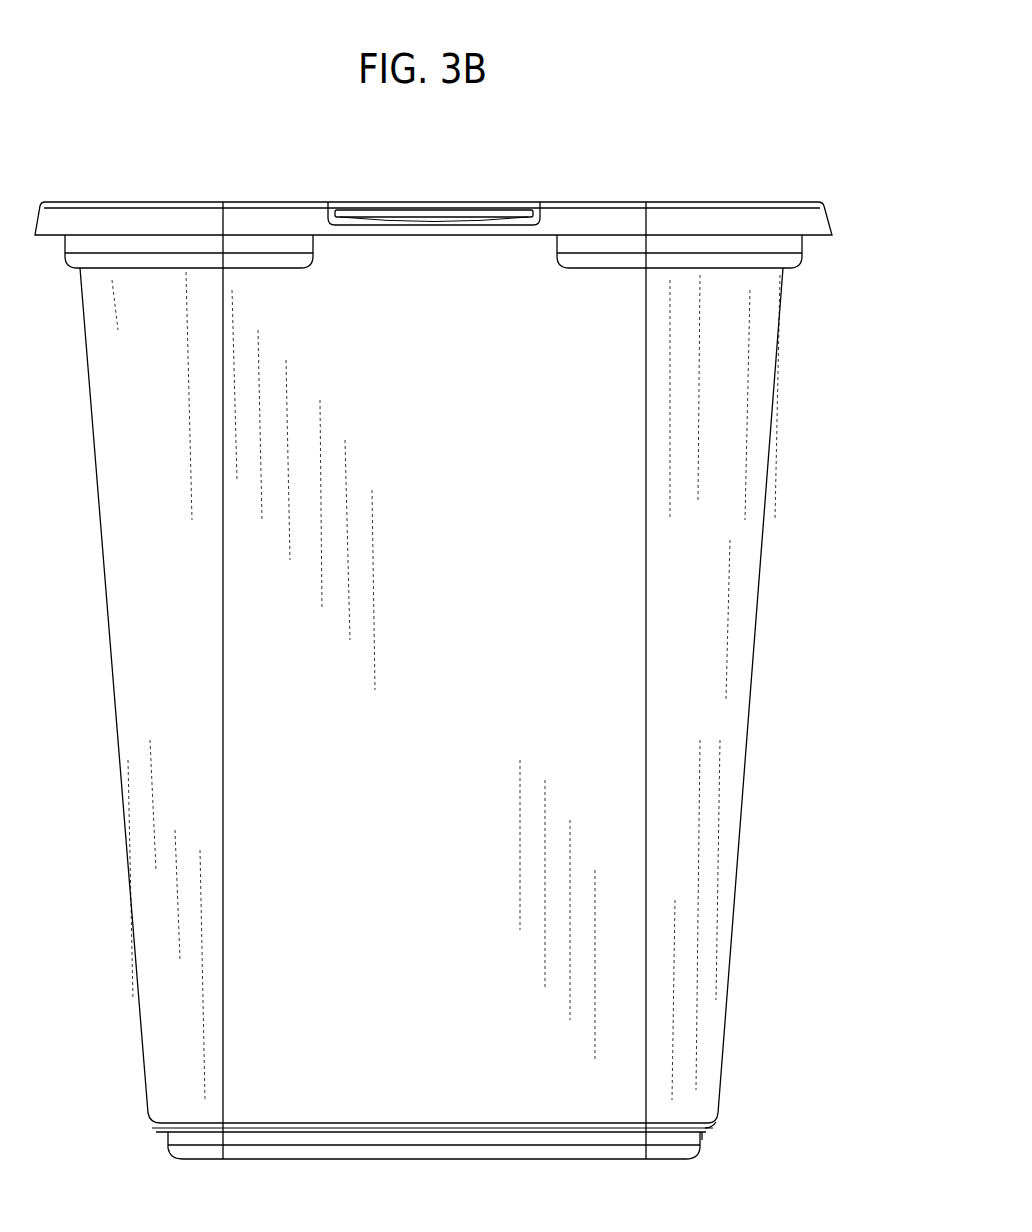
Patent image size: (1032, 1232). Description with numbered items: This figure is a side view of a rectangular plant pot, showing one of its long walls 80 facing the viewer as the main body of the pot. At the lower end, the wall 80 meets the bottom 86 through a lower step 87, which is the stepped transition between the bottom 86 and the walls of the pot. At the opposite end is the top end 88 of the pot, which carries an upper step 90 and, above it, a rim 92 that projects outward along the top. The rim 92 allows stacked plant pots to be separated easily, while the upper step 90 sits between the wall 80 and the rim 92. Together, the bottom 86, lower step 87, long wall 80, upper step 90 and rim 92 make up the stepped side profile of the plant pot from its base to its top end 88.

The top end 88 is at (720, 166).
The rim 92 is at (836, 222).
The upper step 90 is at (806, 237).
The long wall 80 is at (600, 850).
The lower step 87 is at (706, 1130).
The bottom 86 is at (665, 1162).